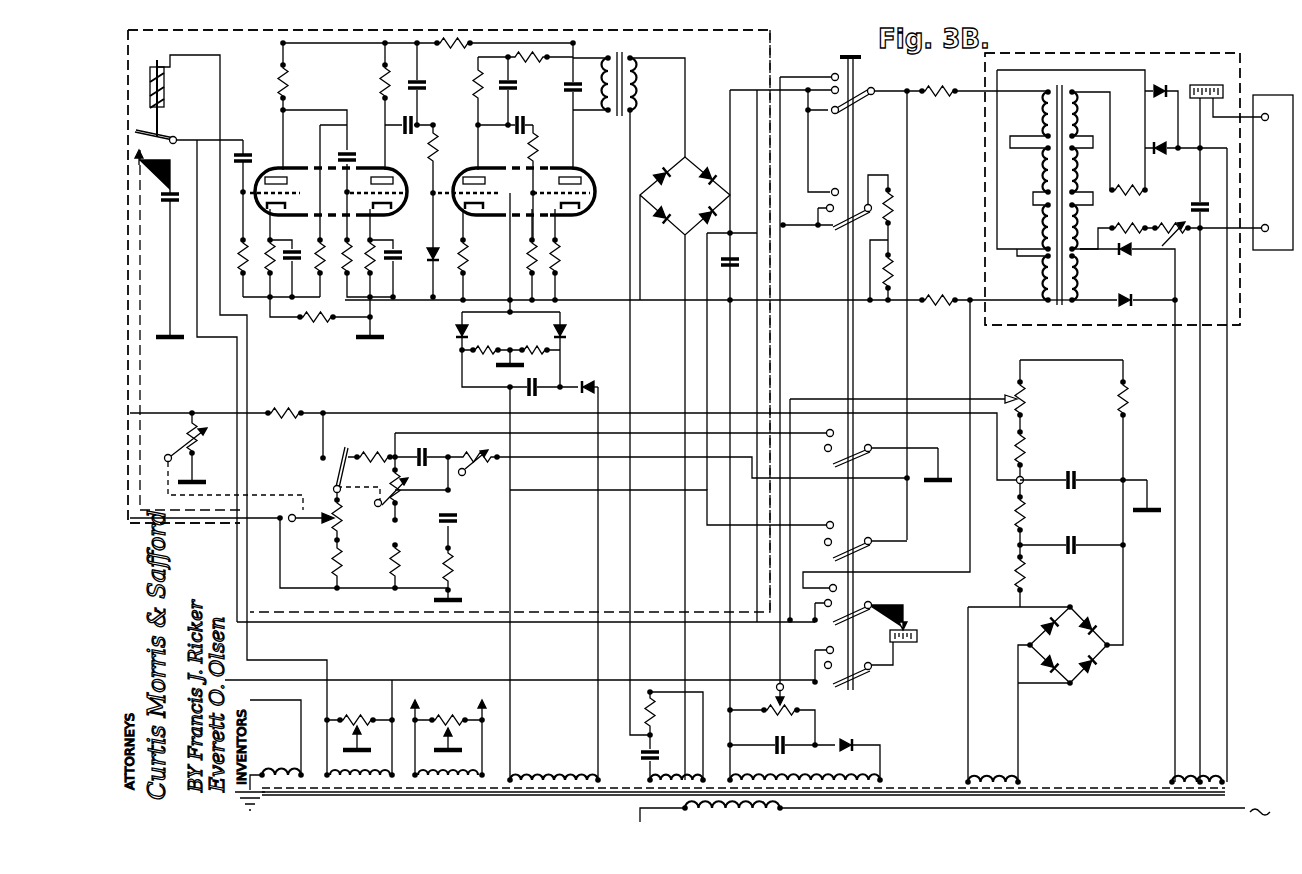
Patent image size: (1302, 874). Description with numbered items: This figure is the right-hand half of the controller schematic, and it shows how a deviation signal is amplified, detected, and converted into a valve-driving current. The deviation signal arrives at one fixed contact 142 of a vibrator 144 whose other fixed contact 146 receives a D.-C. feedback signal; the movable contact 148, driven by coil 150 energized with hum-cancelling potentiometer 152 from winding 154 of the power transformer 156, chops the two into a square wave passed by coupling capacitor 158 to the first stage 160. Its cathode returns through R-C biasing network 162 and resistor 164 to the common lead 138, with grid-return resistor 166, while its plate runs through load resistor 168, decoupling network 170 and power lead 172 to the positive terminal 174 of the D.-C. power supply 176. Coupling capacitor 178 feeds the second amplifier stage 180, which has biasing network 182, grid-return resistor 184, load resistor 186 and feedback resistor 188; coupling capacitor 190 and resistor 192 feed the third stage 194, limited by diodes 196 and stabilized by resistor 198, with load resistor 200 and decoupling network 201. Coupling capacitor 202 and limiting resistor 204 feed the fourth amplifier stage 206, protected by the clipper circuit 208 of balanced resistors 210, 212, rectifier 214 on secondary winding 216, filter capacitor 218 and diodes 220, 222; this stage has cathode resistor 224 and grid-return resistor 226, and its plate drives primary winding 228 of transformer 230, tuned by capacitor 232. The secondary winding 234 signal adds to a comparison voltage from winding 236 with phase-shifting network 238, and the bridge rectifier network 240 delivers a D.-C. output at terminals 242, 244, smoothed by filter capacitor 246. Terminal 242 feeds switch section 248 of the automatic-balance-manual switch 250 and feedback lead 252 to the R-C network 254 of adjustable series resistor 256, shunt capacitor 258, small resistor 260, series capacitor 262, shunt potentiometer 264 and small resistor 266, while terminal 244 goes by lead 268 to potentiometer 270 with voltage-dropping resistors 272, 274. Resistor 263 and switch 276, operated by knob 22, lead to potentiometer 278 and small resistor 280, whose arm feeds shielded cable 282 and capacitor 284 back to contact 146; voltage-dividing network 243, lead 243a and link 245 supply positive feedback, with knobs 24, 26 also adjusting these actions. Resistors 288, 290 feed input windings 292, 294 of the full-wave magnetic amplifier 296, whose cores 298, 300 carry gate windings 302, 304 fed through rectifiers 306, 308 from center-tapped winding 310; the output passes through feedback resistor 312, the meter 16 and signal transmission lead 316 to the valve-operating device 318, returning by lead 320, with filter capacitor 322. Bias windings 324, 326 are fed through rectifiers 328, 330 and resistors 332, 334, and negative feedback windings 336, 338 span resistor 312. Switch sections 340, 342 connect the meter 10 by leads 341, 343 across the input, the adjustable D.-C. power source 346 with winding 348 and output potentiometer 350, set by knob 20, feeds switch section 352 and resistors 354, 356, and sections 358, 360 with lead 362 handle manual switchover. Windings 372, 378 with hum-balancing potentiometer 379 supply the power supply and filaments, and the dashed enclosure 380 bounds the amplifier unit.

The meter 10 is at (918, 630).
The meter 16 is at (1207, 85).
The knob 20 is at (784, 687).
The potentiometer control knob 22 is at (377, 508).
The knob 24 is at (466, 475).
The knob 26 is at (280, 524).
The common circuit lead 138 is at (186, 490).
The fixed contact 142 is at (143, 130).
The vibrator 144 is at (149, 64).
The fixed contact 146 is at (141, 153).
The movable contact 148 is at (166, 135).
The coil 150 is at (165, 87).
The hum-cancelling potentiometer 152 is at (363, 712).
The winding 154 is at (332, 773).
The power transformer 156 is at (496, 796).
The coupling capacitor 158 is at (239, 162).
The first stage 160 is at (270, 168).
The R-C biasing network 162 is at (273, 310).
The resistor 164 is at (320, 321).
The grid-return resistor 166 is at (238, 251).
The load resistor 168 is at (278, 82).
The R-C decoupling network 170 is at (483, 70).
The power lead 172 is at (680, 43).
The positive terminal 174 is at (1017, 483).
The D.-C. power supply 176 is at (1037, 682).
The coupling capacitor 178 is at (330, 140).
The second amplifier stage 180 is at (382, 167).
The R-C biasing network 182 is at (374, 305).
The grid-return resistor 184 is at (347, 245).
The load resistor 186 is at (382, 82).
The resistor 188 is at (318, 248).
The coupling capacitor 190 is at (407, 138).
The resistor 192 is at (436, 170).
The third stage 194 is at (463, 166).
The reverse-connected diodes 196 is at (433, 305).
The resistor 198 is at (463, 240).
The load resistor 200 is at (477, 96).
The R-C decoupling network 201 is at (552, 78).
The coupling capacitor 202 is at (517, 130).
The limiting resistor 204 is at (535, 150).
The fourth amplifier stage 206 is at (576, 167).
The clipper circuit 208 is at (534, 346).
The balanced resistor 210 is at (480, 347).
The balanced resistor 212 is at (533, 347).
The rectifier 214 is at (590, 384).
The secondary winding 216 is at (545, 778).
The filter capacitor 218 is at (538, 390).
The diode 220 is at (458, 342).
The diode 222 is at (562, 337).
The resistor 224 is at (560, 262).
The grid-return resistor 226 is at (530, 268).
The primary winding 228 is at (608, 92).
The transformer 230 is at (628, 112).
The capacitor 232 is at (570, 92).
The secondary winding 234 is at (637, 82).
The winding 236 is at (687, 779).
The phase-shifting network 238 is at (672, 734).
The bridge rectifier network 240 is at (689, 443).
The terminal 242 is at (715, 172).
The voltage-dividing network 243 is at (276, 425).
The lead 243a is at (175, 396).
The terminal 244 is at (647, 170).
The link 245 is at (297, 493).
The filter capacitor 246 is at (734, 270).
The switch section 248 is at (848, 102).
The automatic-balance-manual switch 250 is at (862, 81).
The feedback lead 252 is at (906, 152).
The R-C network 254 is at (454, 525).
The adjustable series resistor 256 is at (475, 452).
The shunt capacitor 258 is at (444, 534).
The small resistor 260 is at (432, 571).
The series capacitor 262 is at (422, 448).
The resistor 263 is at (383, 450).
The shunt potentiometer 264 is at (400, 497).
The small resistor 266 is at (393, 575).
The lead 268 is at (920, 400).
The potentiometer 270 is at (1030, 398).
The voltage-dropping resistor 272 is at (1028, 456).
The voltage-dropping resistor 274 is at (1122, 396).
The switch 276 is at (323, 462).
The potentiometer 278 is at (316, 523).
The small resistor 280 is at (336, 575).
The shielded cable 282 is at (165, 524).
The capacitor 284 is at (165, 213).
The resistor 288 is at (927, 86).
The resistor 290 is at (935, 296).
The input winding 292 is at (1042, 122).
The input winding 294 is at (1040, 283).
The full-wave magnetic amplifier 296 is at (1240, 60).
The saturable magnetic core 298 is at (1066, 170).
The saturable magnetic core 300 is at (1047, 304).
The gate winding 302 is at (1080, 175).
The gate winding 304 is at (1080, 234).
The rectifier 306 is at (1158, 143).
The rectifier 308 is at (1130, 257).
The center-tapped winding 310 is at (1174, 780).
The feedback resistor 312 is at (1132, 188).
The signal transmission lead 316 is at (1260, 110).
The electrical valve-operating device 318 is at (1252, 243).
The lead 320 is at (1273, 172).
The filter capacitor 322 is at (1198, 203).
The bias winding 324 is at (1077, 120).
The bias winding 326 is at (1077, 280).
The rectifier 328 is at (1161, 85).
The rectifier 330 is at (1127, 295).
The resistor 332 is at (1153, 240).
The resistor 334 is at (1183, 247).
The negative feedback winding 336 is at (1045, 175).
The negative feedback winding 338 is at (1045, 231).
The switch section 340 is at (854, 617).
The lead 341 is at (422, 622).
The switch section 342 is at (854, 675).
The lead 343 is at (428, 680).
The adjustable D.-C. power source 346 is at (855, 742).
The winding 348 is at (786, 768).
The output potentiometer 350 is at (774, 703).
The switch section 352 is at (840, 190).
The resistor 354 is at (890, 207).
The resistor 356 is at (890, 262).
The switch section 358 is at (851, 460).
The switch section 360 is at (851, 553).
The lead 362 is at (533, 491).
The winding 372 is at (287, 770).
The winding 378 is at (425, 773).
The hum-balancing potentiometer 379 is at (434, 707).
The amplifier unit 380 is at (776, 64).